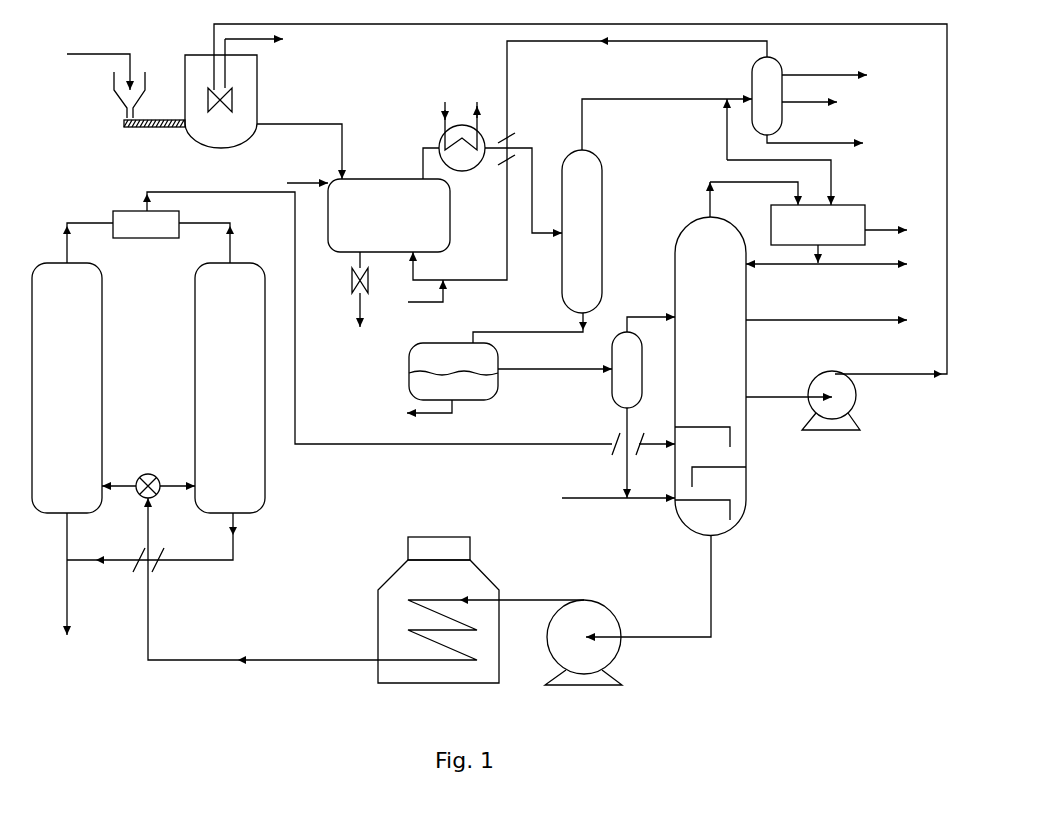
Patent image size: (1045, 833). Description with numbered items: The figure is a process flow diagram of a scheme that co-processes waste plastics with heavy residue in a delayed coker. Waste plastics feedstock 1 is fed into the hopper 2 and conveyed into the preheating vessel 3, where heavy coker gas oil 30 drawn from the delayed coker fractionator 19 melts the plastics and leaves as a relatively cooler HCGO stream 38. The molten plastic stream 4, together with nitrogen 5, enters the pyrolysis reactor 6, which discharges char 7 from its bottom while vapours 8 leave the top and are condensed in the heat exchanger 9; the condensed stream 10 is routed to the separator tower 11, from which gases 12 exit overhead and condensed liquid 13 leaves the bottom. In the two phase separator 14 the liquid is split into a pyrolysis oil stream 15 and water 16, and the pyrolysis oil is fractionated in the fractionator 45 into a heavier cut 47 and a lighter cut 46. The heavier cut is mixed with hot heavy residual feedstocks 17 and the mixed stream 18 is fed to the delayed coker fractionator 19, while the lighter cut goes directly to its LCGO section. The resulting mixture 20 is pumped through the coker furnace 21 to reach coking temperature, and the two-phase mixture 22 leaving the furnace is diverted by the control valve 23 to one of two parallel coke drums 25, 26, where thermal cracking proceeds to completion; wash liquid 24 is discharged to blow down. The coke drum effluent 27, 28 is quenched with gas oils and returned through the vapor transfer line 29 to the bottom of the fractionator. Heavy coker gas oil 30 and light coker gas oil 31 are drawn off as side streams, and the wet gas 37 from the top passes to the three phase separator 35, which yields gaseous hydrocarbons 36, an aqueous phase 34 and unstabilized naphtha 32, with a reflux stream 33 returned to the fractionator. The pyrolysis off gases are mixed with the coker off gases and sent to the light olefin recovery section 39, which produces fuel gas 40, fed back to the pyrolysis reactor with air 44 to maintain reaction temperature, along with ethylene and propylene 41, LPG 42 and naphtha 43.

The waste plastics feedstock 1 is at (77, 52).
The hopper 2 is at (111, 97).
The preheating vessel 3 is at (258, 102).
The molten plastic stream 4 is at (296, 124).
The nitrogen 5 is at (301, 182).
The pyrolysis reactor 6 is at (456, 223).
The char 7 is at (362, 308).
The vapours 8 is at (423, 148).
The heat exchanger 9 is at (475, 172).
The condensed stream 10 is at (535, 145).
The separator tower 11 is at (610, 239).
The gases 12 is at (589, 133).
The condensed liquid 13 is at (543, 330).
The two phase separator 14 is at (445, 338).
The pyrolysis oil stream 15 is at (544, 375).
The water 16 is at (425, 416).
The hot heavy residual feedstocks 17 is at (568, 500).
The mixed stream 18 is at (647, 504).
The delayed coker fractionator 19 is at (673, 362).
The resulting mixture 20 is at (714, 614).
The coker furnace 21 is at (480, 564).
The two-phase mixture 22 is at (213, 671).
The control valve 23 is at (155, 470).
The wash liquid 24 is at (62, 612).
The coke drum 25 is at (194, 312).
The coke drum 26 is at (110, 384).
The coke drum effluent 27 is at (241, 252).
The coke drum effluent 28 is at (62, 248).
The vapor transfer line 29 is at (300, 314).
The heavy coker gas oil 30 is at (886, 382).
The light coker gas oil 31 is at (867, 324).
The unstabilized naphtha 32 is at (869, 266).
The reflux stream 33 is at (762, 272).
The aqueous phase 34 is at (888, 230).
The three phase separator 35 is at (870, 206).
The gaseous hydrocarbons 36 is at (837, 180).
The wet gas 37 is at (717, 204).
The cooler HCGO stream 38 is at (284, 44).
The light olefin recovery section 39 is at (749, 76).
The fuel gas 40 is at (618, 46).
The ethylene and propylene 41 is at (828, 74).
The LPG 42 is at (797, 104).
The naphtha 43 is at (838, 144).
The air 44 is at (413, 306).
The fractionator 45 is at (613, 387).
The lighter cut 46 is at (640, 310).
The heavier cut 47 is at (636, 478).